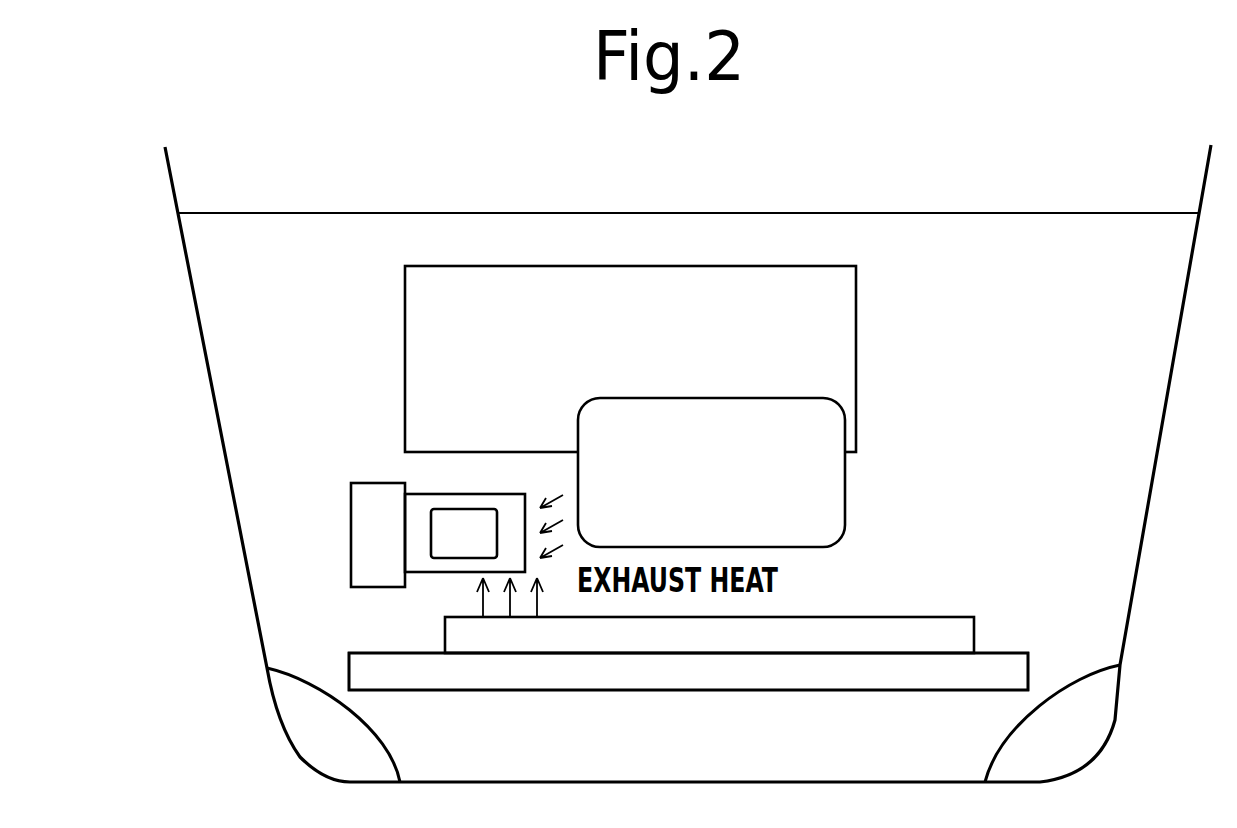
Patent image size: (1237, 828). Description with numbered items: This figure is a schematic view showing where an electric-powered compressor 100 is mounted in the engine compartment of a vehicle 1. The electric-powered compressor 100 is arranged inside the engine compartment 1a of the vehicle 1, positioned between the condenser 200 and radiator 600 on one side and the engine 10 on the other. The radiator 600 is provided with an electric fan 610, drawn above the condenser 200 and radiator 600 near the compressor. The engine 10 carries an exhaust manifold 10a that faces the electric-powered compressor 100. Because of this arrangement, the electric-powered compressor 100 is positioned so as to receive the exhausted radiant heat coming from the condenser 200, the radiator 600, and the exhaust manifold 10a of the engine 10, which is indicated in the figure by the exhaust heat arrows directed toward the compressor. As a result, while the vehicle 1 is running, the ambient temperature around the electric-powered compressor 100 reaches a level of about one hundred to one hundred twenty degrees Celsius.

The vehicle 1 is at (172, 320).
The engine compartment 1a is at (228, 372).
The engine 10 is at (835, 328).
The exhaust manifold 10a is at (823, 485).
The electric-powered compressor 100 is at (338, 505).
The electric fan 610 is at (953, 635).
The condenser 200 is at (768, 670).
The radiator 600 is at (790, 745).